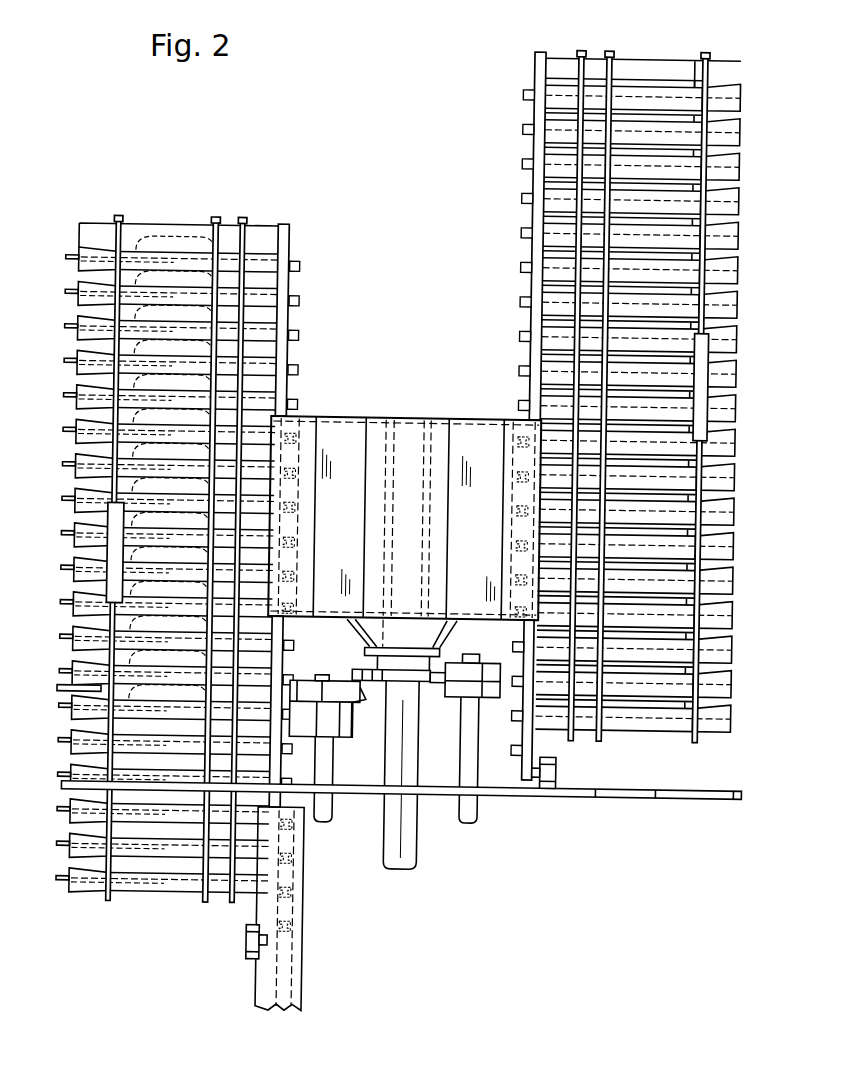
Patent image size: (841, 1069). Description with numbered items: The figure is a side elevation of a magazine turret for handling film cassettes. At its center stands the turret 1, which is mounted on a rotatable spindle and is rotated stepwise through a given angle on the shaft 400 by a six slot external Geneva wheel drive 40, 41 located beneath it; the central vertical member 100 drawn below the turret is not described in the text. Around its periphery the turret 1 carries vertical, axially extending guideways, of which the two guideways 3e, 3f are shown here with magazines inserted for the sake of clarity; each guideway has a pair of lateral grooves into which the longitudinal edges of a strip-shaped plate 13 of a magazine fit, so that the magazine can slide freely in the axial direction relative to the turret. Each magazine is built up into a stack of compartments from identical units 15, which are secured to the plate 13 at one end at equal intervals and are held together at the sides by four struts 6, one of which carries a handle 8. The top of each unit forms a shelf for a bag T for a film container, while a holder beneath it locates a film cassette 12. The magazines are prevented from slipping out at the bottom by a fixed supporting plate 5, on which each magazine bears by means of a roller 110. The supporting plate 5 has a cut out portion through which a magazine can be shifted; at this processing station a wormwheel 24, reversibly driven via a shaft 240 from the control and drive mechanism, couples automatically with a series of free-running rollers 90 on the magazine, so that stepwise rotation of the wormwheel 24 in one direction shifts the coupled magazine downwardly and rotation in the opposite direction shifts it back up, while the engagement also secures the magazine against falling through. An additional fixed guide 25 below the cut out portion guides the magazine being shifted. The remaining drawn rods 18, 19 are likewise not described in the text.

The turret 1 is at (405, 501).
The guideway 3e is at (464, 432).
The guideway 3f is at (322, 432).
The supporting plate 5 is at (604, 796).
The struts 6 is at (115, 222).
The handle 8 is at (106, 548).
The film cassette 12 is at (146, 238).
The plate 13 is at (284, 248).
The units 15 is at (172, 891).
The tie rod 18 is at (212, 222).
The tie rod 19 is at (604, 54).
The wormwheel 24 is at (340, 738).
The fixed guide 25 is at (309, 946).
The Geneva wheel drive 40 is at (437, 682).
The Geneva wheel drive 41 is at (488, 662).
The free-running rollers 90 is at (298, 337).
The drive shaft 100 is at (414, 856).
The roller 110 is at (253, 944).
The shaft 240 is at (337, 815).
The shaft 400 is at (482, 814).
The bag T is at (76, 676).